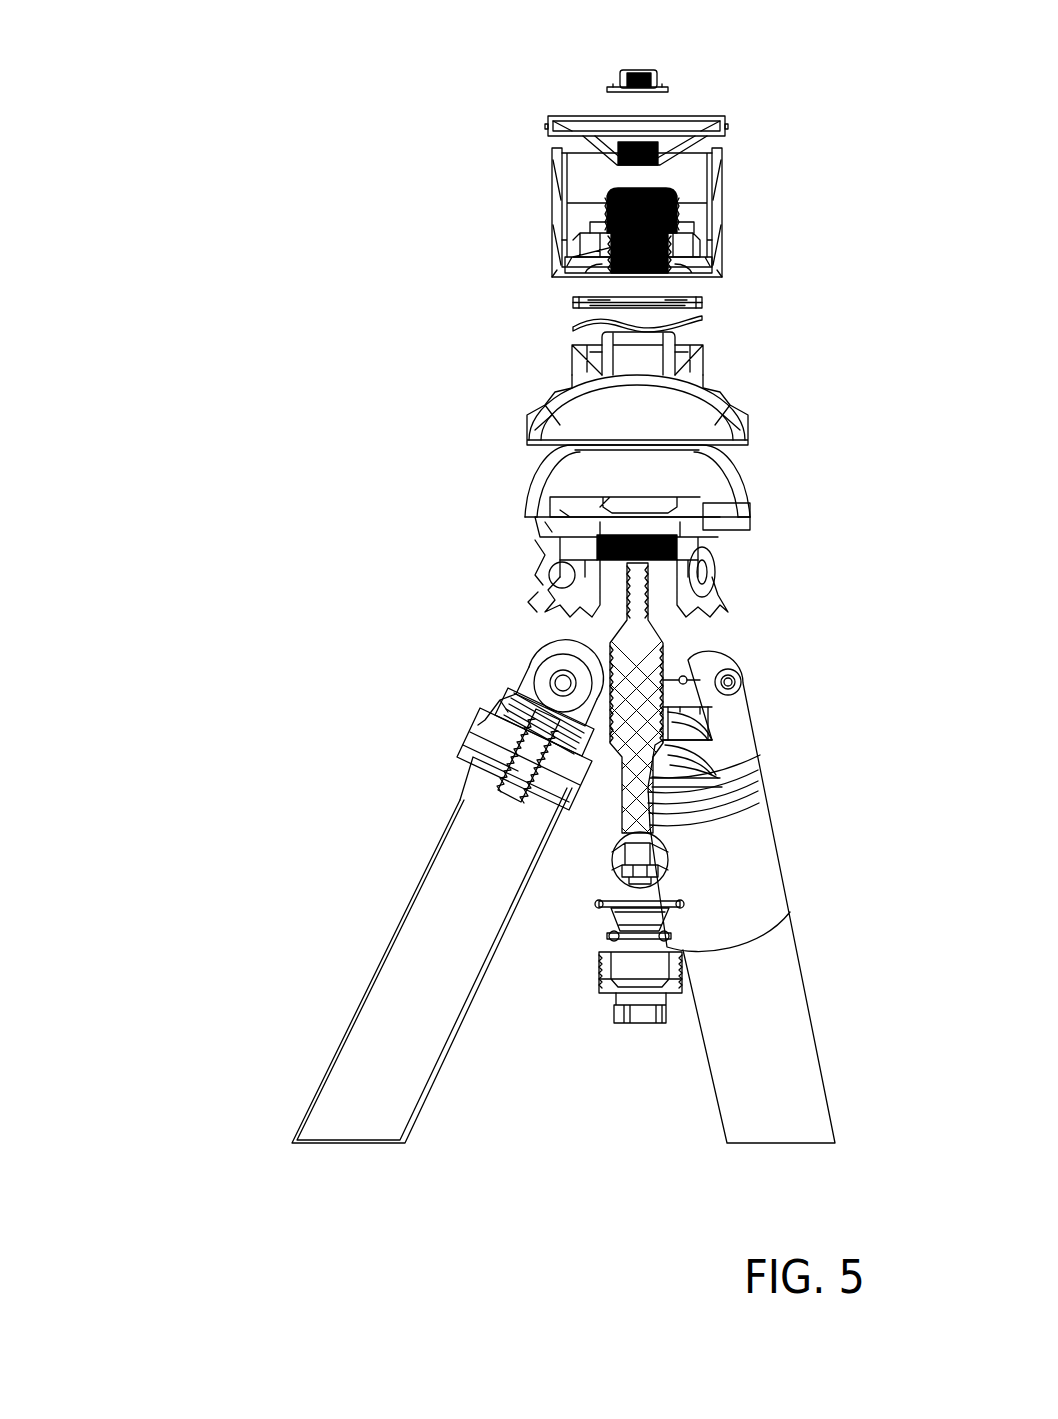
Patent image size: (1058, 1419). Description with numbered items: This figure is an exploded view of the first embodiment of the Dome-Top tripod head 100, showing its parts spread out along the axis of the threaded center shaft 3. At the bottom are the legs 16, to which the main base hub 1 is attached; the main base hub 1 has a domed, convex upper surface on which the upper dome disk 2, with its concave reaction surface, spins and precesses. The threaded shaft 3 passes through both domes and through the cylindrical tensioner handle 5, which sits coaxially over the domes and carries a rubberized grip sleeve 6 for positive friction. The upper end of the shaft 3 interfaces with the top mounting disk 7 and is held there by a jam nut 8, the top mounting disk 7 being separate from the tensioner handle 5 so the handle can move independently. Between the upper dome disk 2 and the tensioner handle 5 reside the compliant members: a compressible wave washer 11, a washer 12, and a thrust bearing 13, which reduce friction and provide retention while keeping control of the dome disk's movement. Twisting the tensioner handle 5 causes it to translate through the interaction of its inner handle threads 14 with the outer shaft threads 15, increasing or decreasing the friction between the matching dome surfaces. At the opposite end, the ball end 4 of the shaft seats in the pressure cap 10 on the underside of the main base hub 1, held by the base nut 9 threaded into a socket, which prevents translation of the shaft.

The first exemplary embodiment of the tripod head 100 is at (200, 66).
The jam nut 8 is at (613, 76).
The top mounting disk 7 is at (727, 120).
The rubberized grip sleeve 6 is at (553, 166).
The tensioner handle 5 is at (718, 166).
The inner handle threads 14 is at (672, 247).
The washer 12 is at (568, 300).
The thrust bearing 13 is at (568, 303).
The wave washer 11 is at (572, 322).
The upper dome disk 2 is at (737, 388).
The main base hub 1 is at (532, 490).
The threaded shaft 3 is at (613, 628).
The outer shaft threads 15 is at (666, 652).
The ball end of center shaft 4 is at (609, 872).
The pressure cap 10 is at (627, 905).
The base nut 9 is at (656, 1025).
The legs 16 is at (383, 983).